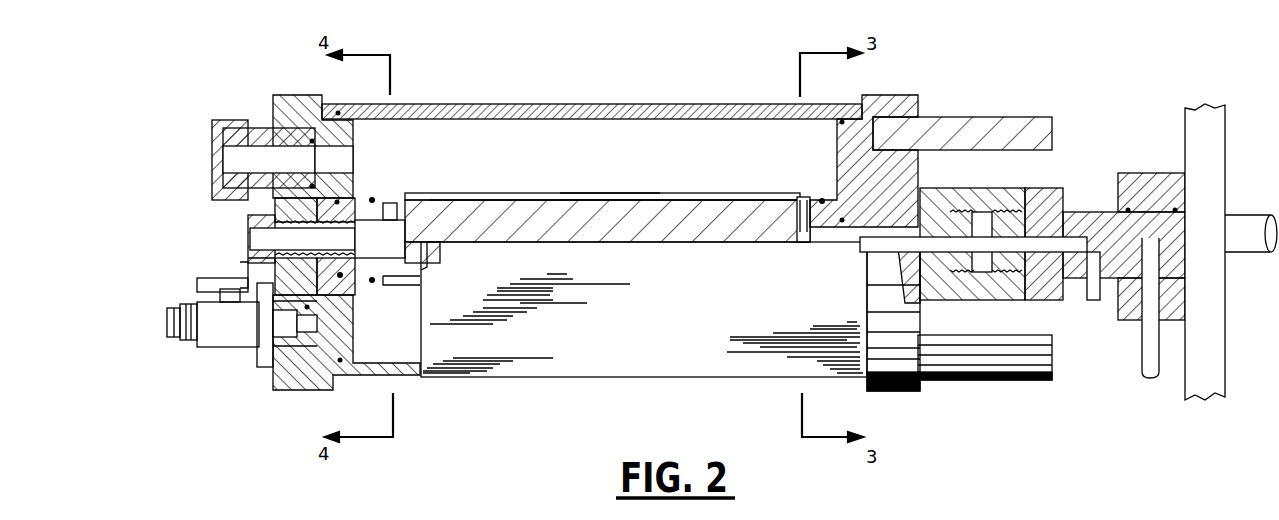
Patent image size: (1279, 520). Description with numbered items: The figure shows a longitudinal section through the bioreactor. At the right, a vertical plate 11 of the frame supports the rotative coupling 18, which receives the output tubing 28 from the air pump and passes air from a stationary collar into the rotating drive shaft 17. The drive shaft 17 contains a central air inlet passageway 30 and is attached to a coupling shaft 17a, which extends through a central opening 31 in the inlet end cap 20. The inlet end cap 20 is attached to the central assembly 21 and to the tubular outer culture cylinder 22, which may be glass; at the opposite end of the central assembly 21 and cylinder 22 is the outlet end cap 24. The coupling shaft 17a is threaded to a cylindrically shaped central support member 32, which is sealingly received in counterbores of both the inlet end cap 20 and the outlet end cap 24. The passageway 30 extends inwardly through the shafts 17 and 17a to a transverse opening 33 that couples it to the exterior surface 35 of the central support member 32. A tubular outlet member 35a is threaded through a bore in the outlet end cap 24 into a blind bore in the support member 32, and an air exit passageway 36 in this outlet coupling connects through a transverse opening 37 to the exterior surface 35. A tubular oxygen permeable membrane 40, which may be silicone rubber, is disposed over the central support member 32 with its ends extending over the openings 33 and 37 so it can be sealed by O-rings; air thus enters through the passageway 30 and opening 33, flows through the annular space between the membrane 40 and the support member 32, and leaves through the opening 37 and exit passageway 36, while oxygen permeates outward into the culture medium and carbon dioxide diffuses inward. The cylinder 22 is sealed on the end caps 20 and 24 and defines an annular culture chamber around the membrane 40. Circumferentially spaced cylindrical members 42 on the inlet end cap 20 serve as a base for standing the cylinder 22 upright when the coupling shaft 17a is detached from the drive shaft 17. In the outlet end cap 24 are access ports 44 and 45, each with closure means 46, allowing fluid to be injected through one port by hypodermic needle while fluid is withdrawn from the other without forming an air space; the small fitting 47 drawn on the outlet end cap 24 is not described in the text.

The plate 11 is at (1205, 155).
The drive shaft 17 is at (1080, 202).
The coupling shaft 17a is at (982, 188).
The rotative coupling 18 is at (1163, 173).
The inlet end cap 20 is at (893, 95).
The central assembly 21 is at (557, 183).
The tubular outer culture cylinder 22 is at (527, 104).
The outlet end cap 24 is at (288, 95).
The output tubing 28 is at (1142, 363).
The central air inlet passageway 30 is at (1087, 300).
The central opening 31 is at (867, 243).
The central support member 32 is at (687, 217).
The transverse opening 33 is at (798, 197).
The exterior surface 35 is at (650, 197).
The tubular outlet member 35a is at (248, 258).
The air exit passageway 36 is at (248, 245).
The transverse opening 37 is at (365, 220).
The tubular oxygen permeable membrane 40 is at (607, 193).
The cylindrical members 42 is at (1000, 112).
The access port 44 is at (347, 158).
The access port 45 is at (333, 323).
The closure means 46 is at (233, 120).
The valve 47 is at (228, 347).